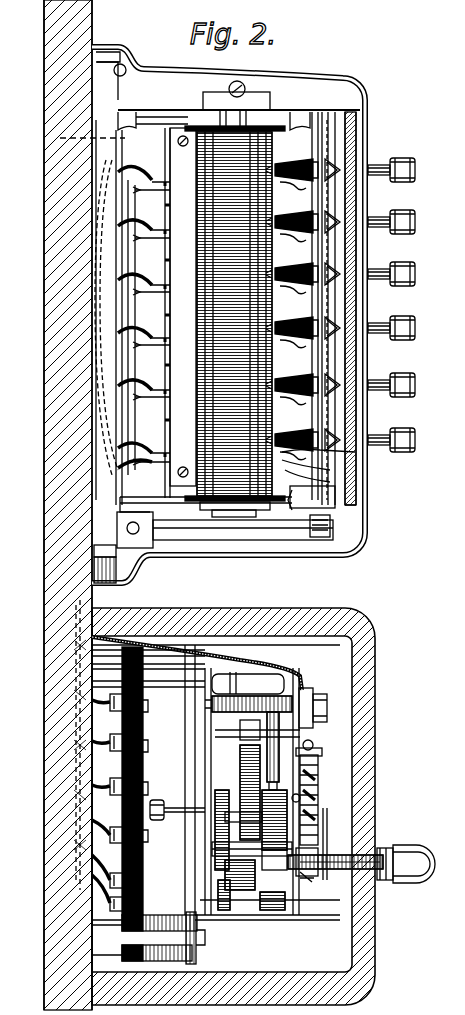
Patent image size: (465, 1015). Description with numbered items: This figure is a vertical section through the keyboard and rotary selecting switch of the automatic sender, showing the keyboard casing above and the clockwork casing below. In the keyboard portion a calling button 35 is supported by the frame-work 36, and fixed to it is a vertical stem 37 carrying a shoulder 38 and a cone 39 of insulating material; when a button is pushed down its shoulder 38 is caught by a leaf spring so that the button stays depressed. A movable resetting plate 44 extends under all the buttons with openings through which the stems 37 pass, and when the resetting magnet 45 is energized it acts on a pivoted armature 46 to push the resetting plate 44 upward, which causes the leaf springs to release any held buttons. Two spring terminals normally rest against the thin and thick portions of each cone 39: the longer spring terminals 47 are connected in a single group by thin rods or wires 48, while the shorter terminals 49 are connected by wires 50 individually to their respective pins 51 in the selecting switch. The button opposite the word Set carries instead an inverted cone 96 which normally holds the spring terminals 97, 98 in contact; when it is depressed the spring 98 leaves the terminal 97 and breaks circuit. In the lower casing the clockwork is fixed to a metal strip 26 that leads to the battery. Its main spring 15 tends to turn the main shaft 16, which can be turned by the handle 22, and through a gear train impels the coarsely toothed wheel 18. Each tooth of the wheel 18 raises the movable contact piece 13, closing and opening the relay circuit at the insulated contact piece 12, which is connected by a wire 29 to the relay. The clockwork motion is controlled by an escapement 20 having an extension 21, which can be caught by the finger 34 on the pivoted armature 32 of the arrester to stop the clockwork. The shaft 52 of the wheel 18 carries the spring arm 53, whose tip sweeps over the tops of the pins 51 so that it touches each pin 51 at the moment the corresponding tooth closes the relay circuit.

The insulated contact piece 12 is at (315, 700).
The movable contact piece 13 is at (320, 758).
The main spring 15 is at (270, 912).
The main shaft 16 is at (336, 858).
The coarsely toothed wheel 18 is at (326, 795).
The escapement 20 is at (280, 736).
The extension 21 is at (238, 690).
The handle 22 is at (422, 880).
The metal strip 26 is at (456, 757).
The wire 29 is at (256, 648).
The pivoted armature 32 is at (272, 694).
The finger 34 is at (257, 684).
The calling button 35 is at (418, 170).
The frame-work 36 is at (335, 500).
The vertical stem 37 is at (395, 418).
The shoulder 38 is at (388, 429).
The cone 39 is at (305, 253).
The resetting plate 44 is at (325, 146).
The resetting magnet 45 is at (226, 153).
The pivoted armature 46 is at (225, 530).
The longer spring terminal 47 is at (38, 414).
The thin rod or wire 48 is at (134, 258).
The shorter spring terminal 49 is at (283, 162).
The wire 50 is at (126, 170).
The pin 51 is at (148, 705).
The shaft 52 is at (174, 804).
The spring arm 53 is at (147, 862).
The inverted cone 96 is at (330, 452).
The spring terminal 97 is at (300, 462).
The spring terminal 98 is at (305, 482).